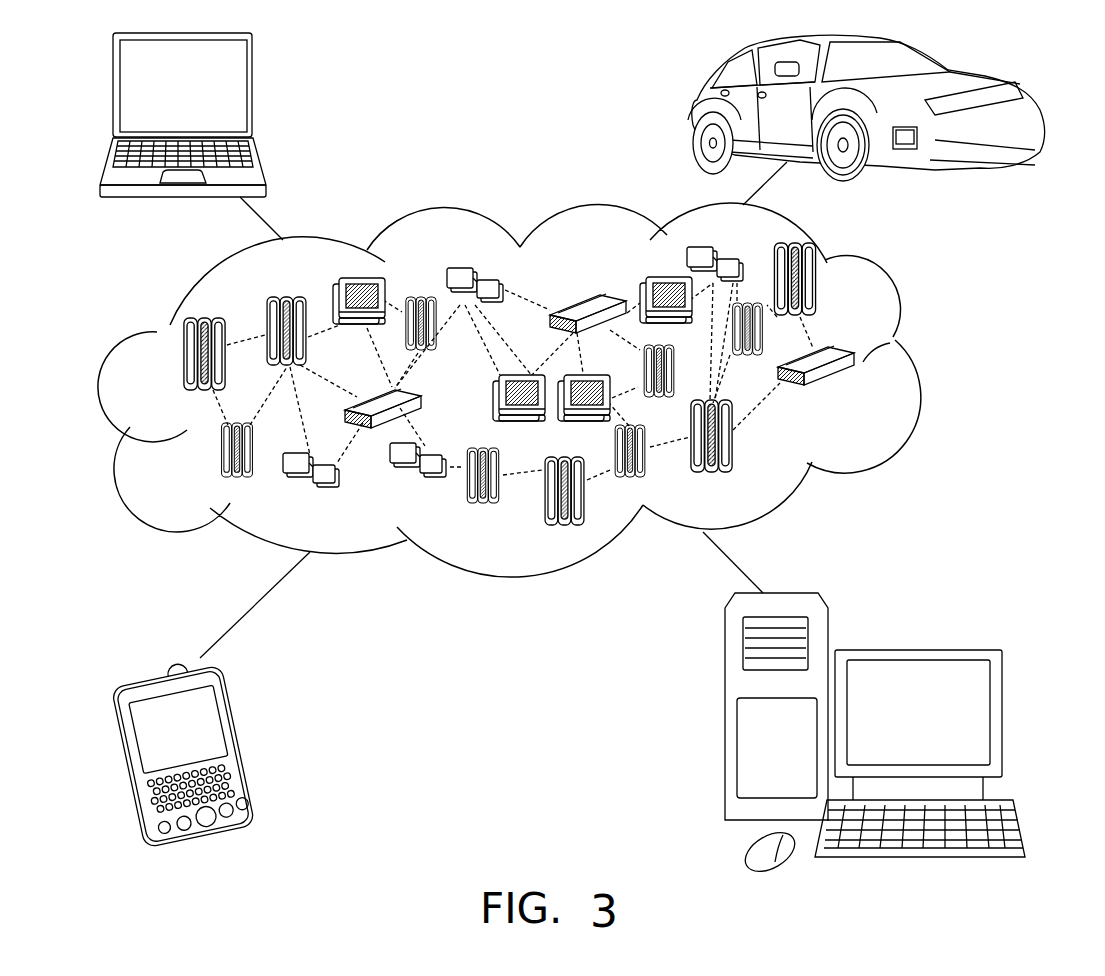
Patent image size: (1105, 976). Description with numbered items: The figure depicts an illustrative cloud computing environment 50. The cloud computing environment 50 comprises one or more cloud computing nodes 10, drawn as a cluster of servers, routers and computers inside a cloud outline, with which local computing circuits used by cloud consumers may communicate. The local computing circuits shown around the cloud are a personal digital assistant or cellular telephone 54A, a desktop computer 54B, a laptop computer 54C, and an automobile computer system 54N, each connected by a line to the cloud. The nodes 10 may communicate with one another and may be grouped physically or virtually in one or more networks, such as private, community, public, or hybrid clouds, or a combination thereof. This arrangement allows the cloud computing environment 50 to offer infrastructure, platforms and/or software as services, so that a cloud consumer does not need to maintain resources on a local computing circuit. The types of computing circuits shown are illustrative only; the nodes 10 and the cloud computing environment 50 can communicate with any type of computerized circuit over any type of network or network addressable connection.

The cloud computing node 10 is at (862, 395).
The cloud computing environment 50 is at (922, 367).
The personal digital assistant or cellular telephone 54A is at (240, 743).
The desktop computer 54B is at (913, 648).
The laptop computer 54C is at (252, 95).
The automobile computer system 54N is at (830, 108).